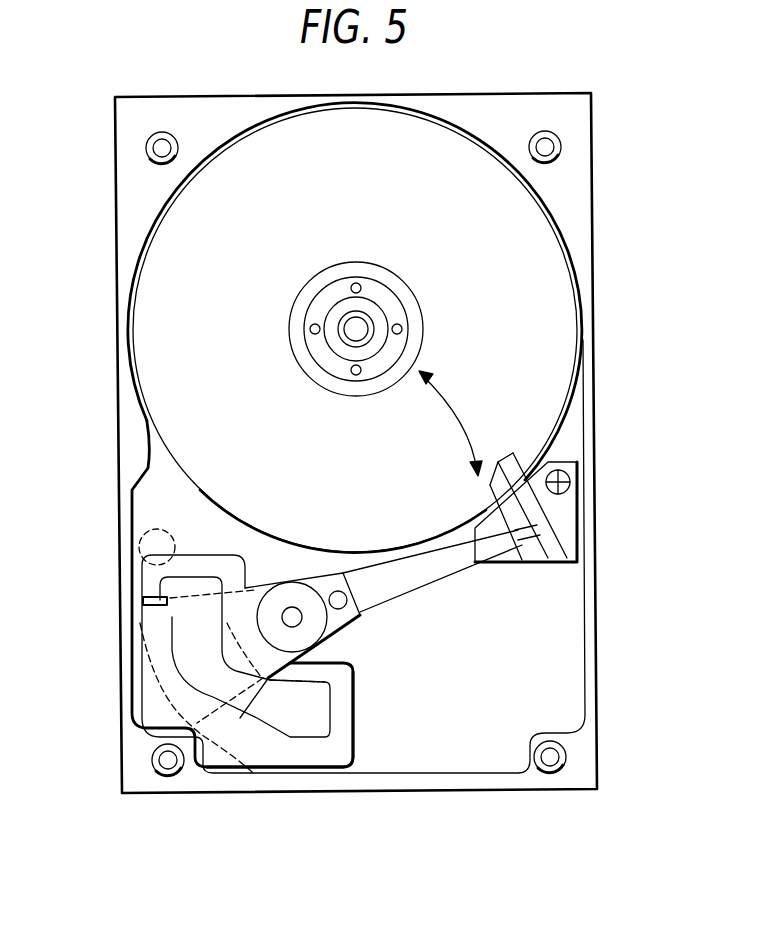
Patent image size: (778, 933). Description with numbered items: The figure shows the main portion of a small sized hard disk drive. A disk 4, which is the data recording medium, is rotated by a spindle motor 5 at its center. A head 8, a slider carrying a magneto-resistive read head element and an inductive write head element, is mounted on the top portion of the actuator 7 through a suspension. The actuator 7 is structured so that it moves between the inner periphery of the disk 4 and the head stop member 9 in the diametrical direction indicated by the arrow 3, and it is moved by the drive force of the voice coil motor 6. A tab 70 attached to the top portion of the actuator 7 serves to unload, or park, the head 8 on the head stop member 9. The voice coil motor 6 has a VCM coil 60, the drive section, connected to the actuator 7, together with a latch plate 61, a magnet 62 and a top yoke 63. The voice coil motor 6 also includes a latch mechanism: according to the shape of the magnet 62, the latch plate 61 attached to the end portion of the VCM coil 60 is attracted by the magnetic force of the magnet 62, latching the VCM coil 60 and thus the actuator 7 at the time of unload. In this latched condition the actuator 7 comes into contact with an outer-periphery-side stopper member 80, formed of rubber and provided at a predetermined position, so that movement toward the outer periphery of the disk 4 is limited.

The arrow 3 is at (453, 407).
The disk 4 is at (544, 290).
The spindle motor 5 is at (358, 324).
The voice coil motor 6 is at (393, 749).
The actuator 7 is at (350, 620).
The head 8 is at (537, 567).
The head stop member 9 is at (525, 483).
The VCM coil 60 is at (253, 773).
The latch plate 61 is at (143, 597).
The magnet 62 is at (347, 768).
The top yoke 63 is at (293, 768).
The tab 70 is at (547, 522).
The outer-periphery-side stopper member 80 is at (157, 529).